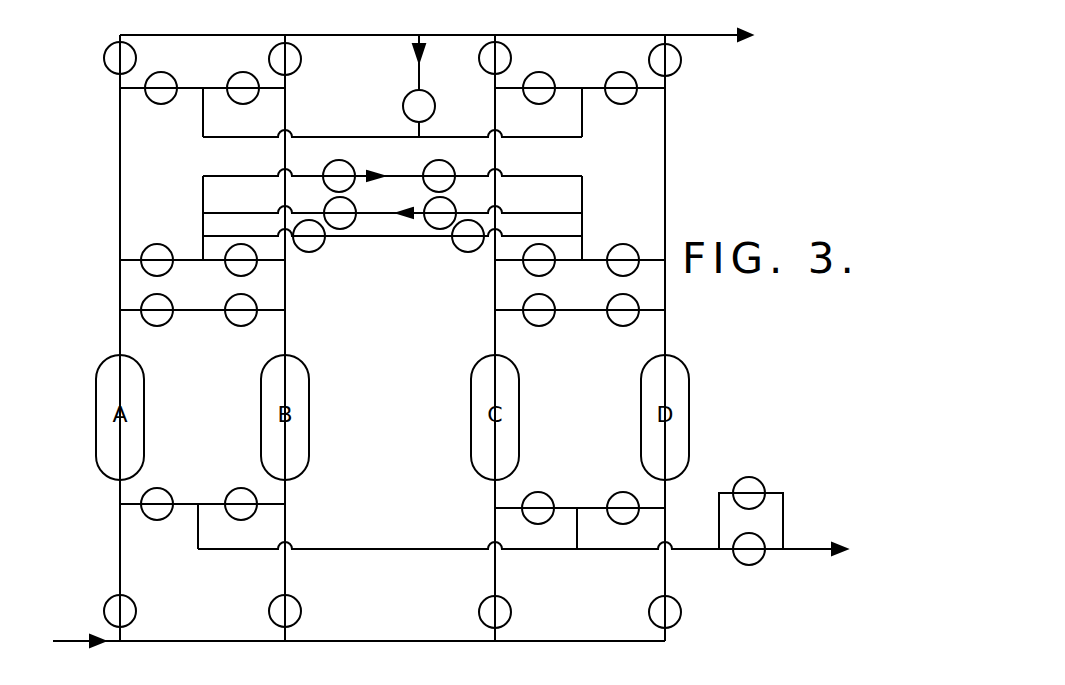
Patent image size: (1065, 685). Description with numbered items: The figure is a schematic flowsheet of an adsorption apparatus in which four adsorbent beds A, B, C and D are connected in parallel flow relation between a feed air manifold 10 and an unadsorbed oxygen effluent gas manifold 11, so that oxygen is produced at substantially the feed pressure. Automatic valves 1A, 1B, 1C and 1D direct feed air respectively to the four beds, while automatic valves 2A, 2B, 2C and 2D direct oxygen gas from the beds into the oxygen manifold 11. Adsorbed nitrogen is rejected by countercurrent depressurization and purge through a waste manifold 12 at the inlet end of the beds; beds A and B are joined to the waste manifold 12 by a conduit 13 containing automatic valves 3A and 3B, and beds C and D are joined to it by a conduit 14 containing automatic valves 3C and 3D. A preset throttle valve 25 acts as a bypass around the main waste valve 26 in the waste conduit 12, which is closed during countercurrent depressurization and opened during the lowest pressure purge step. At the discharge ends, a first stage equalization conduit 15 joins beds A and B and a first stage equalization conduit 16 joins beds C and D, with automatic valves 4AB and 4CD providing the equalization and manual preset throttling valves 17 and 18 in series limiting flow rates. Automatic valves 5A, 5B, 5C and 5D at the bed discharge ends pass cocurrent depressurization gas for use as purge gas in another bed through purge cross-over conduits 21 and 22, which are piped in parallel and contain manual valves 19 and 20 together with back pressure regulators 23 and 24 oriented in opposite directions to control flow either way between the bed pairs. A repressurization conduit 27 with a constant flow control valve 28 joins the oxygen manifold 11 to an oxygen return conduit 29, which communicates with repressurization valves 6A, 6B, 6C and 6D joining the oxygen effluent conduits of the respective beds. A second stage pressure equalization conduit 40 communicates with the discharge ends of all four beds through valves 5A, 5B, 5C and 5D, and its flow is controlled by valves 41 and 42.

The automatic valve 1A is at (136, 611).
The automatic valve 1B is at (301, 611).
The automatic valve 1C is at (511, 612).
The automatic valve 1D is at (681, 612).
The automatic valve 2A is at (106, 53).
The automatic valve 2B is at (301, 59).
The automatic valve 2C is at (511, 60).
The automatic valve 2D is at (681, 58).
The automatic valve 3A is at (150, 519).
The automatic valve 3B is at (232, 493).
The automatic valve 3C is at (546, 523).
The automatic valve 3D is at (612, 523).
The automatic valve 4AB is at (165, 324).
The automatic valve 4CD is at (618, 326).
The automatic valve 5A is at (165, 274).
The automatic valve 5B is at (245, 276).
The automatic valve 5C is at (550, 272).
The automatic valve 5D is at (614, 246).
The repressurization valve 6A is at (158, 104).
The repressurization valve 6B is at (238, 104).
The repressurization valve 6C is at (532, 104).
The repressurization valve 6D is at (618, 104).
The feed air manifold 10 is at (76, 643).
The unadsorbed oxygen effluent gas manifold 11 is at (694, 35).
The waste manifold 12 is at (362, 549).
The conduit 13 is at (198, 503).
The conduit 14 is at (577, 507).
The first stage equalization conduit 15 is at (188, 310).
The first stage equalization conduit 16 is at (592, 312).
The manual preset throttling valve 17 is at (251, 324).
The manual preset throttling valve 18 is at (532, 325).
The manual valve 19 is at (448, 164).
The manual valve 20 is at (352, 206).
The purge cross-over conduit 21 is at (388, 174).
The purge cross-over conduit 22 is at (388, 211).
The back pressure regulator 23 is at (351, 164).
The back pressure regulator 24 is at (452, 203).
The preset throttle valve 25 is at (762, 484).
The main waste valve 26 is at (758, 562).
The repressurization conduit 27 is at (412, 78).
The constant flow control valve 28 is at (438, 92).
The oxygen return conduit 29 is at (318, 137).
The second stage pressure equalization conduit 40 is at (370, 240).
The valve 41 is at (318, 250).
The valve 42 is at (457, 250).